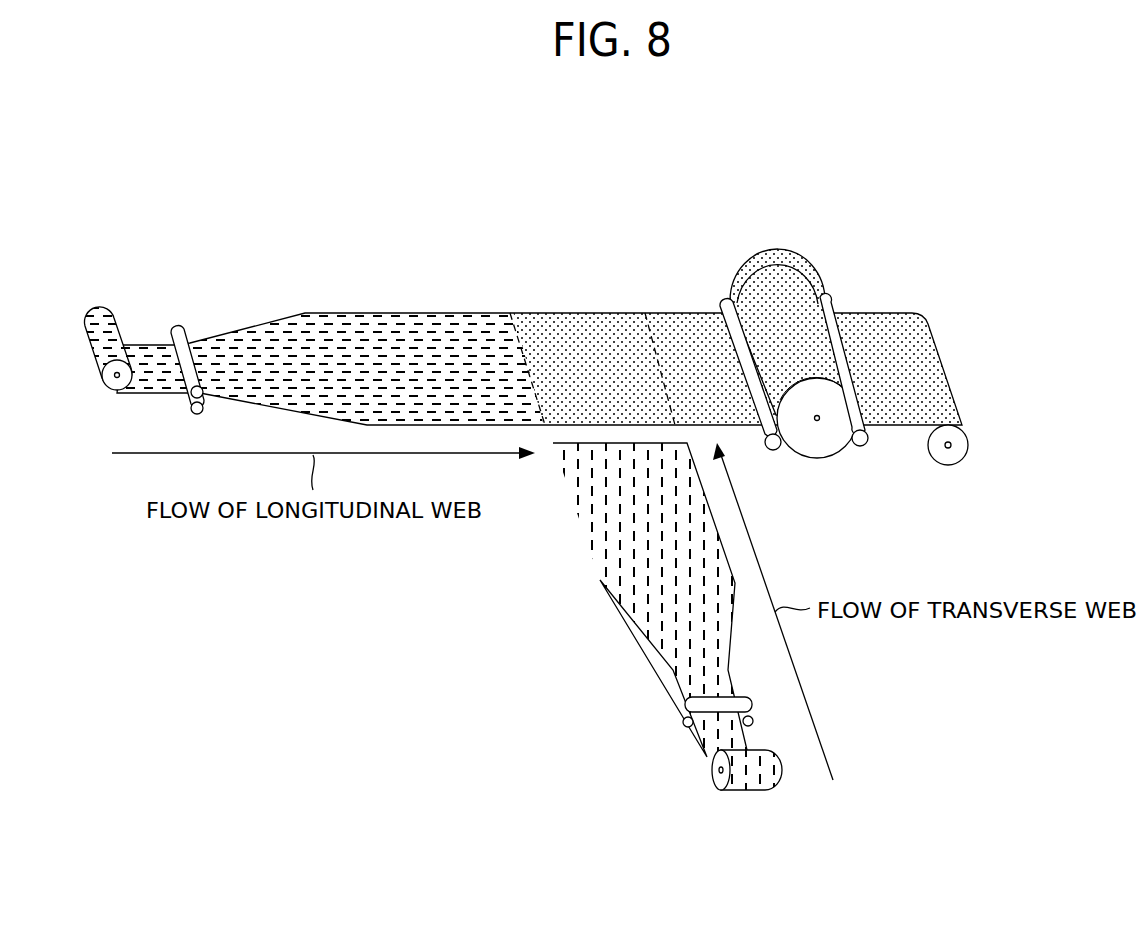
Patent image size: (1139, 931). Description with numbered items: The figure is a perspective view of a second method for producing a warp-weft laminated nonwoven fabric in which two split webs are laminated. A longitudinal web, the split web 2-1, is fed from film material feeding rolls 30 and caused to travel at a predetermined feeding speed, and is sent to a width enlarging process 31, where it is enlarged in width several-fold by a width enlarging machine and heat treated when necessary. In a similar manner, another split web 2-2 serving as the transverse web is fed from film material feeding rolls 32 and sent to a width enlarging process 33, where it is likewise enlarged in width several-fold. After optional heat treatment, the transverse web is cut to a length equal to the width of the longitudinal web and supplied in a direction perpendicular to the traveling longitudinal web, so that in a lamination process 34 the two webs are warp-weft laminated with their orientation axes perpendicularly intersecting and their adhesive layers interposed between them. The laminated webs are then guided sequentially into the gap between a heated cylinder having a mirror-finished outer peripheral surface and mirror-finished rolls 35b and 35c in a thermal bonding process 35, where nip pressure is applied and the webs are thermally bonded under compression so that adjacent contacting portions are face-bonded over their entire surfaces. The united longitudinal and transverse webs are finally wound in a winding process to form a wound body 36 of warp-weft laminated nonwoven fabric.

The split web (longitudinal web) 2-1 is at (155, 345).
The split web (transverse web) 2-2 is at (707, 757).
The film material feeding rolls 30 is at (180, 330).
The width enlarging process 31 is at (285, 327).
The film material feeding rolls 32 is at (688, 720).
The width enlarging process 33 is at (623, 612).
The lamination process 34 is at (553, 313).
The thermal bonding process 35 is at (792, 232).
The mirror-finished roll 35b is at (722, 302).
The mirror-finished roll 35c is at (836, 300).
The wound body 36 is at (945, 466).